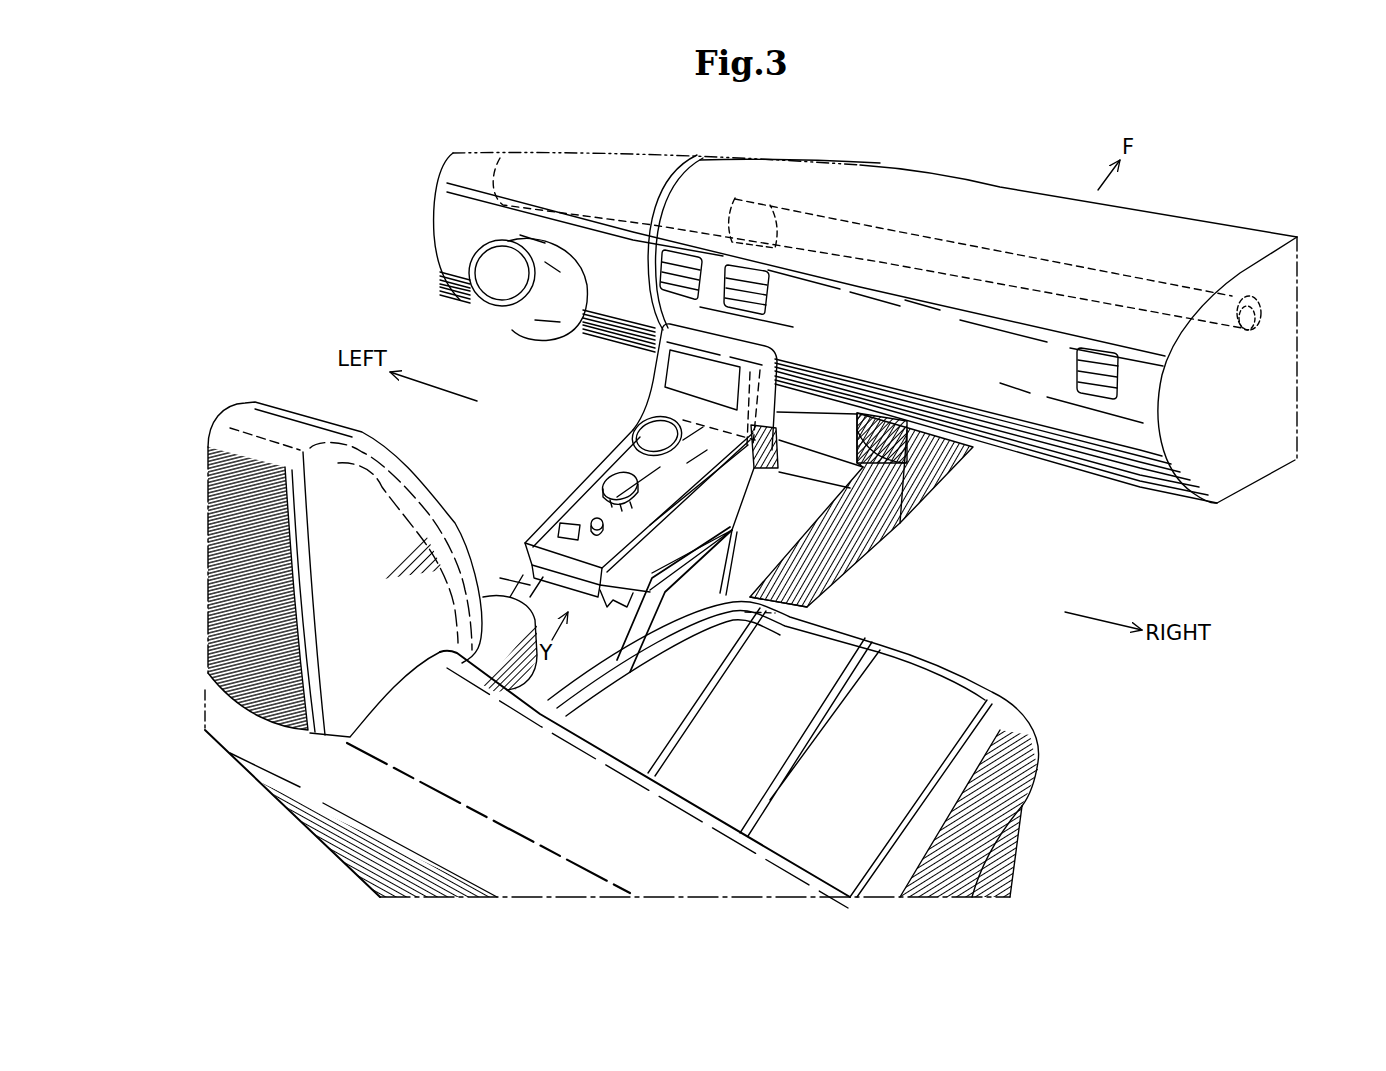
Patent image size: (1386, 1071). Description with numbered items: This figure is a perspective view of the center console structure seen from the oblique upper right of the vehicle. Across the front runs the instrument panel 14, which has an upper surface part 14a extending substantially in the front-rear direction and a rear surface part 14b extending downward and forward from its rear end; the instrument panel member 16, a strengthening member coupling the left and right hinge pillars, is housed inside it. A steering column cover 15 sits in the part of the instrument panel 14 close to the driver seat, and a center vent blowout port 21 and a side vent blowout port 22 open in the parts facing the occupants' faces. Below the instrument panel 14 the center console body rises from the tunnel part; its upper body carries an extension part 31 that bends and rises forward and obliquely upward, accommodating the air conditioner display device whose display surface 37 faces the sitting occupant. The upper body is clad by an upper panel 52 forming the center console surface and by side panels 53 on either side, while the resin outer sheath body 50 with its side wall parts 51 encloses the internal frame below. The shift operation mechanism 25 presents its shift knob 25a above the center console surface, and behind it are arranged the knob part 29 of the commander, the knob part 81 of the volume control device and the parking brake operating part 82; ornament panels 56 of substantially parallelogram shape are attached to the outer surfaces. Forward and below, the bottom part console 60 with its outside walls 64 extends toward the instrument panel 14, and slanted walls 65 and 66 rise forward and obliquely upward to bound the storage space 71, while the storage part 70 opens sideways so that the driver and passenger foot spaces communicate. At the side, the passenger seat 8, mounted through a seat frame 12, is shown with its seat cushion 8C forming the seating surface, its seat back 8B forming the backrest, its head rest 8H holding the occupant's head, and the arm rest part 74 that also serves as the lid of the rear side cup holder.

The instrument panel 14 is at (1042, 466).
The upper surface part 14a is at (878, 192).
The rear surface part 14b is at (946, 329).
The instrument panel member 16 is at (968, 246).
The steering column cover 15 is at (483, 320).
The center vent blowout port 21 is at (660, 273).
The side vent blowout port 22 is at (1077, 372).
The extension part 31 is at (800, 368).
The display surface 37 is at (710, 377).
The upper panel 52 is at (622, 453).
The outer sheath body 50 is at (513, 580).
The knob part of commander 29 is at (637, 497).
The side panels 53 is at (610, 602).
The shift operation mechanism 25 is at (644, 421).
The shift knob 25a is at (633, 433).
The ornament panels 56 is at (630, 466).
The parking brake operating part 82 is at (558, 528).
The knob part of volume control device 81 is at (601, 534).
The slanted wall 65 is at (779, 490).
The outside walls 64 is at (857, 563).
The bottom part console 60 is at (880, 543).
The slanted wall 66 is at (940, 487).
The storage part 70 is at (765, 558).
The storage space 71 is at (778, 602).
The head rest 8H is at (343, 568).
The arm rest part 74 is at (483, 602).
The seat back 8B is at (607, 779).
The seat cushion 8C is at (820, 752).
The side wall parts 51 is at (680, 587).
The passenger seat 8 is at (1040, 750).
The seat frame 12 is at (1020, 847).